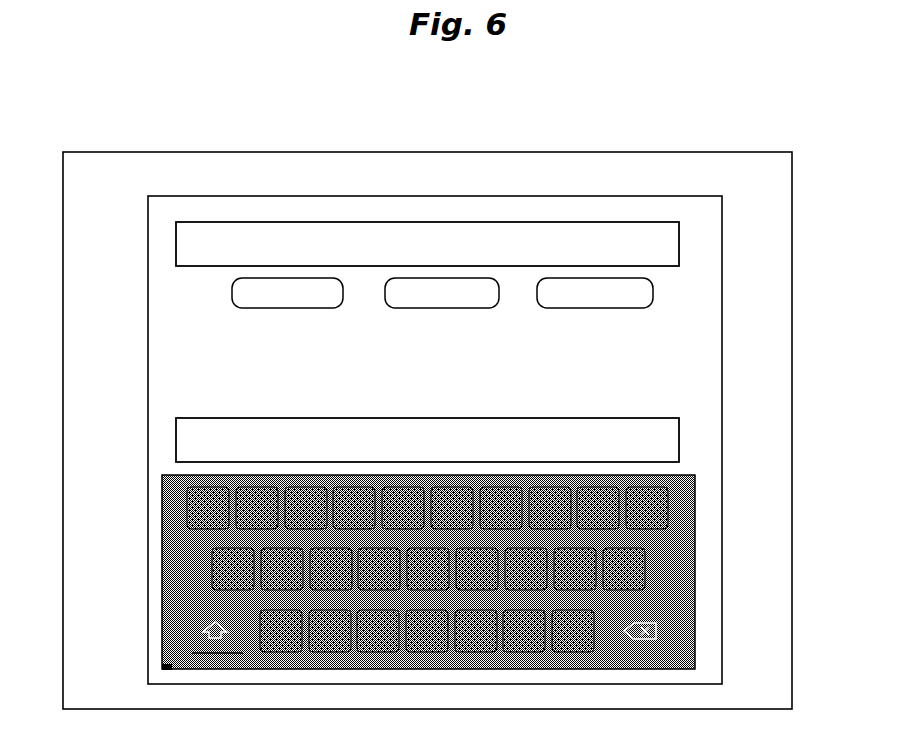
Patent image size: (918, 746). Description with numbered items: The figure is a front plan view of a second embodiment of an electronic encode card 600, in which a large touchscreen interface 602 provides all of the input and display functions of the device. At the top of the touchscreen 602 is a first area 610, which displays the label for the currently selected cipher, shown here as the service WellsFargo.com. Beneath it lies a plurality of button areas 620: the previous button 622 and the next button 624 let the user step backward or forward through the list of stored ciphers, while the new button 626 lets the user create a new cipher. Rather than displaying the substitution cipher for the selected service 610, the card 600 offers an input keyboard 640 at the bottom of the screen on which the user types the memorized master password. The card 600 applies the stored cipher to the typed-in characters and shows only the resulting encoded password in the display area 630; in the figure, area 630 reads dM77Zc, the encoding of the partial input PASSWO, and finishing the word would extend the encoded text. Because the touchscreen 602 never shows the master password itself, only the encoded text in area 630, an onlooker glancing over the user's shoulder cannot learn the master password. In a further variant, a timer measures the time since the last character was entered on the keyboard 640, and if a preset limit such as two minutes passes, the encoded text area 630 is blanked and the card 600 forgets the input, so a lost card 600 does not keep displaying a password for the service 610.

The electronic encode card 600 is at (680, 152).
The touchscreen interface 602 is at (270, 195).
The first area 610 is at (176, 236).
The button areas 620 is at (491, 294).
The previous button 622 is at (288, 310).
The next button 624 is at (440, 310).
The new cipher button 626 is at (595, 310).
The encoded password display area 630 is at (176, 431).
The input keyboard 640 is at (162, 542).